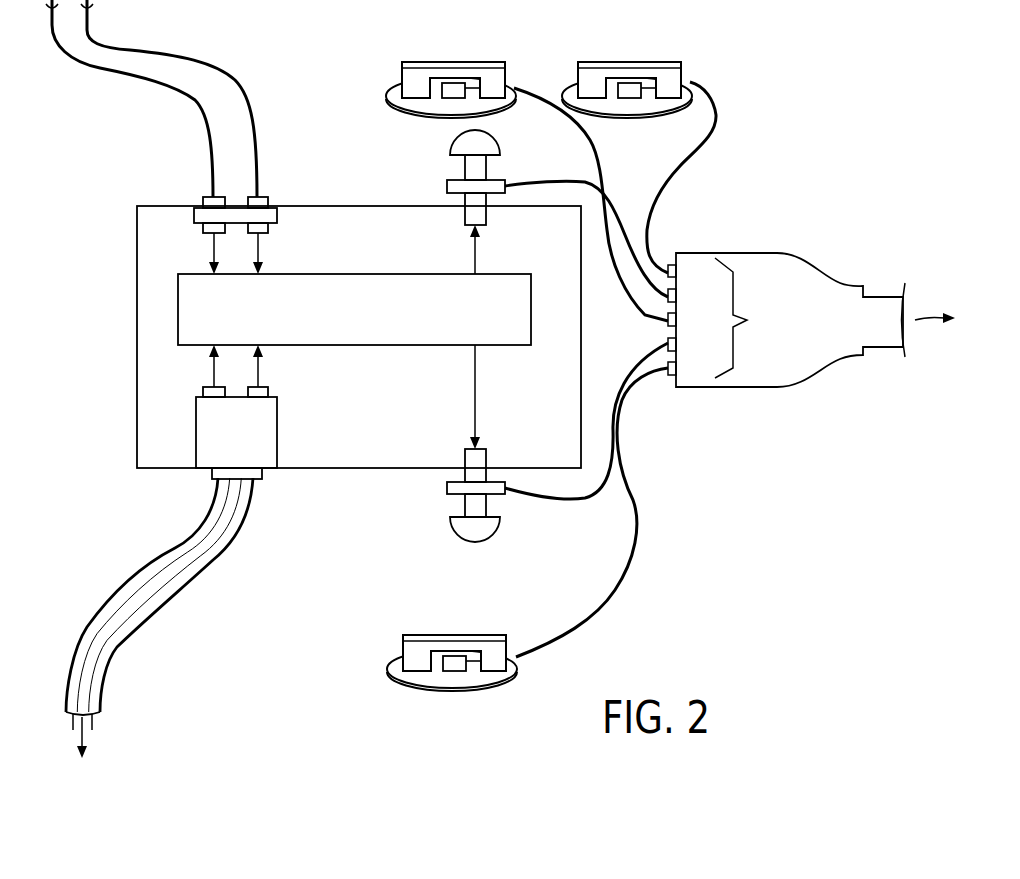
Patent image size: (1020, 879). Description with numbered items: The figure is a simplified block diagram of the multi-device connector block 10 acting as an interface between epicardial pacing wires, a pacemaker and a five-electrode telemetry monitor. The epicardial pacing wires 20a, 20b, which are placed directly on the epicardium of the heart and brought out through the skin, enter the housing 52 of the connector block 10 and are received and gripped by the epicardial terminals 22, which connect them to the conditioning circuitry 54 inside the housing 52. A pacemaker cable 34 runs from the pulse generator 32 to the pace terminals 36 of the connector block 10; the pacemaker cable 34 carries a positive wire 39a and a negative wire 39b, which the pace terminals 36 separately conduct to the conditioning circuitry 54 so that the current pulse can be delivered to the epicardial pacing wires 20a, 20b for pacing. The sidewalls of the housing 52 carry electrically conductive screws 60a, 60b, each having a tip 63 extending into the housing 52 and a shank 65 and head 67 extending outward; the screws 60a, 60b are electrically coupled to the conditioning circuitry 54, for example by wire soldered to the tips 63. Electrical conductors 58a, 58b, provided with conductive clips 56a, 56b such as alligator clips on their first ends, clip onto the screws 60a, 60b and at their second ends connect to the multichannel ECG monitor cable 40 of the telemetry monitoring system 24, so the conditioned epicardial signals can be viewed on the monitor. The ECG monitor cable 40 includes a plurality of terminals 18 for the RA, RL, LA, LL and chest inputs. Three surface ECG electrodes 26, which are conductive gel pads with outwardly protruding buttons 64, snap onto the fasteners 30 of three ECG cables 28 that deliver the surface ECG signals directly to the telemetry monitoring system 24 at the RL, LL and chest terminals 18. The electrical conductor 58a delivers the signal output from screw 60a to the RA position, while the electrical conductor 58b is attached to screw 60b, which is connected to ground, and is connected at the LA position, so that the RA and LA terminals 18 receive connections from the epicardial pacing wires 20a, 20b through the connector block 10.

The multi-device connector block 10 is at (99, 188).
The terminals 18 is at (728, 320).
The epicardial pacing wire 20a is at (163, 82).
The epicardial pacing wire 20b is at (213, 73).
The epicardial terminals 22 is at (268, 216).
The telemetry monitoring system 24 is at (922, 322).
The surface ECG electrodes 26 is at (480, 107).
The ECG cables 28 is at (680, 158).
The fasteners 30 is at (418, 82).
The pulse generator 32 is at (85, 735).
The pacemaker cable 34 is at (179, 618).
The pace terminals 36 is at (258, 430).
The positive wire 39a is at (143, 588).
The negative wire 39b is at (173, 600).
The multichannel ECG monitor cable 40 is at (786, 353).
The housing 52 is at (137, 235).
The conditioning circuitry 54 is at (178, 310).
The conductive clip 56a is at (447, 490).
The conductive clip 56b is at (447, 185).
The electrical conductor 58a is at (628, 390).
The electrical conductor 58b is at (623, 223).
The screw 60a is at (465, 519).
The screw 60b is at (452, 155).
The tip 63 is at (480, 215).
The buttons 64 is at (455, 92).
The shank 65 is at (465, 170).
The head 67 is at (469, 142).